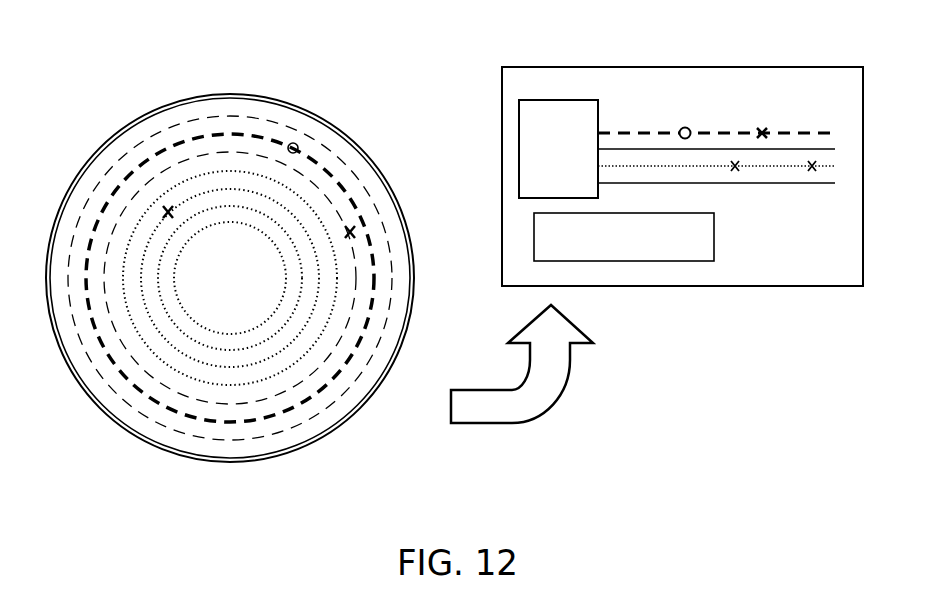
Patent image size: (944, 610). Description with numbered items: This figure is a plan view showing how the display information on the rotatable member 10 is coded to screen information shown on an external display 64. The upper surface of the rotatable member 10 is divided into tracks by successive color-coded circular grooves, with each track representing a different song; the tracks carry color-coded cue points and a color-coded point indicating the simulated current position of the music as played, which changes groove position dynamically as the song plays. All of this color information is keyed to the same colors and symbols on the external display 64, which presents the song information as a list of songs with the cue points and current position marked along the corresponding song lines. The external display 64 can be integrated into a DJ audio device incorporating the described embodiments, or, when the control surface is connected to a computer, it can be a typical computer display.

The rotatable member 10 is at (154, 91).
The external display 64 is at (610, 67).